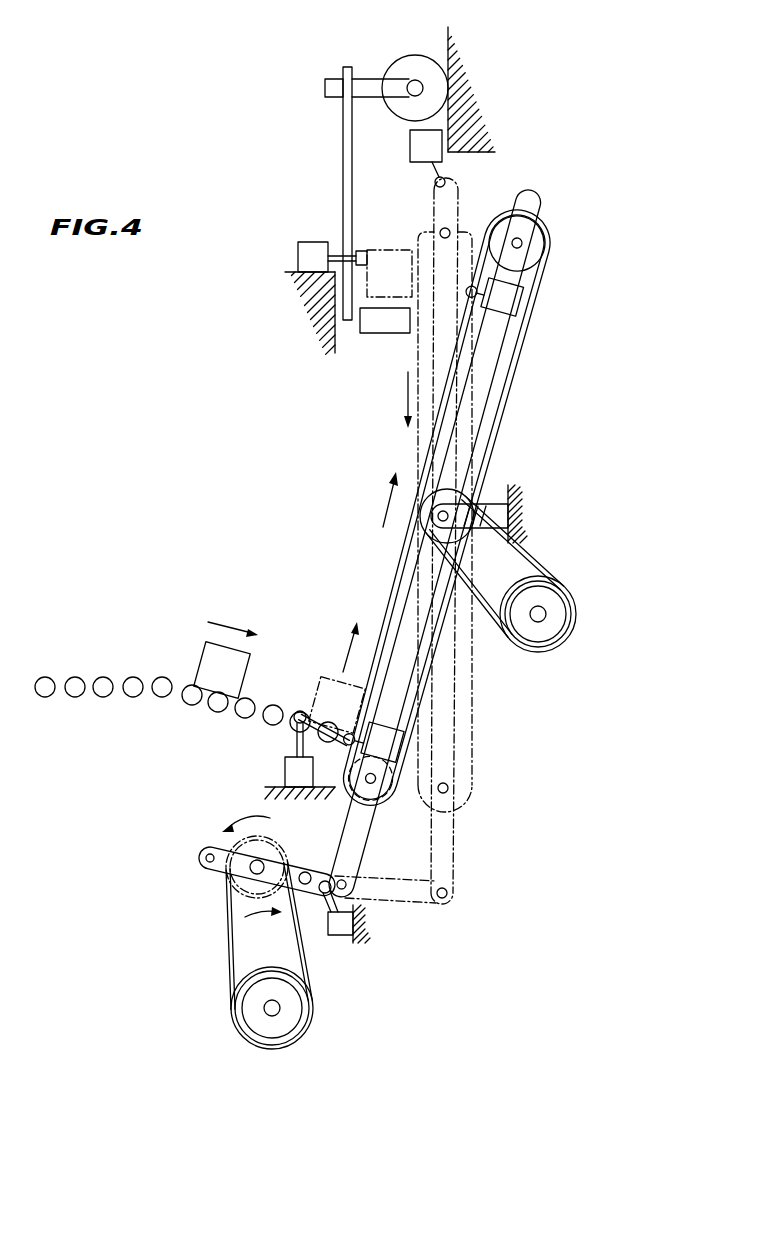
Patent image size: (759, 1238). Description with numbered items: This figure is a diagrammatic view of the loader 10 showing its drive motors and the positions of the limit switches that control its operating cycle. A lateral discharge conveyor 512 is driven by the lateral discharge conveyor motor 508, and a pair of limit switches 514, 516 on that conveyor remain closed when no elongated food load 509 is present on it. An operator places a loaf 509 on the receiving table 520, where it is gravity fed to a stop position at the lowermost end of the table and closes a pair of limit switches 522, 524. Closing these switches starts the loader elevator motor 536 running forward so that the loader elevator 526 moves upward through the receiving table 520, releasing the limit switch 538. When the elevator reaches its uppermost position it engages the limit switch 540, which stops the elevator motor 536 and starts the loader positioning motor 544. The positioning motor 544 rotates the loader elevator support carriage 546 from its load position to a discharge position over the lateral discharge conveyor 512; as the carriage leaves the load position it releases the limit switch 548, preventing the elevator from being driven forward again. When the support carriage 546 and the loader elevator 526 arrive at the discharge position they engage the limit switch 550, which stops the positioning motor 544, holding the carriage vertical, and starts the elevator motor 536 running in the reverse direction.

The loader 10 is at (641, 101).
The lateral discharge conveyor motor 508 is at (418, 55).
The limit switch 550 is at (430, 143).
The limit switch 514 is at (278, 298).
The limit switch 516 is at (298, 266).
The load 509 is at (378, 250).
The lateral discharge conveyor 512 is at (374, 345).
The loader elevator support carriage 546 is at (360, 832).
The limit switch 540 is at (512, 302).
The limit switch 538 is at (392, 742).
The loader elevator motor 536 is at (575, 590).
The loader elevator 526 is at (366, 684).
The receiving table 520 is at (144, 706).
The limit switch 522 is at (228, 870).
The limit switch 524 is at (287, 776).
The limit switch 548 is at (340, 935).
The loader positioning motor 544 is at (297, 1040).